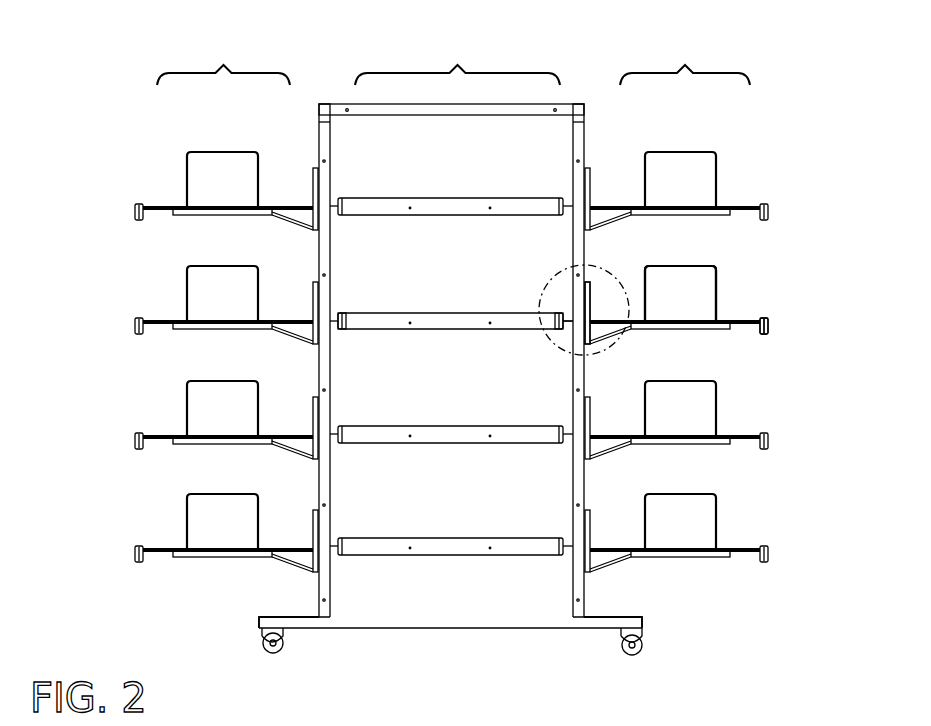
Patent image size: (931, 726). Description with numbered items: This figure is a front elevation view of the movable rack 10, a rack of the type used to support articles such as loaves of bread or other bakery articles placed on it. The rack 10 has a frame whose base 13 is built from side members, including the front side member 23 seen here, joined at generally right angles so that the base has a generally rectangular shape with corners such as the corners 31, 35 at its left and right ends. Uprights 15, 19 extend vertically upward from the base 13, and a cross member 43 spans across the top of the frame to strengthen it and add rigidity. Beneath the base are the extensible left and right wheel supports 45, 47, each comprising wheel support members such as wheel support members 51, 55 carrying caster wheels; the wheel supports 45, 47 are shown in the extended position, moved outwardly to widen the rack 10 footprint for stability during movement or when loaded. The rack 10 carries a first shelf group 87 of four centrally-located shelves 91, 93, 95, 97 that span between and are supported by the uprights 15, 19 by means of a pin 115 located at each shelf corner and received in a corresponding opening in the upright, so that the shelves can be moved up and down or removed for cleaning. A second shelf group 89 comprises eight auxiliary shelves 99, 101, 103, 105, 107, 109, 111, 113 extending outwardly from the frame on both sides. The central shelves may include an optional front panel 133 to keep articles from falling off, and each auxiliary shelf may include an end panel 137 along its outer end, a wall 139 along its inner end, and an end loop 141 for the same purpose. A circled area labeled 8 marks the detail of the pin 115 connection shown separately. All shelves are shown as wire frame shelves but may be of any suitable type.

The movable rack 10 is at (149, 49).
The base 13 is at (503, 628).
The upright 15 is at (320, 488).
The upright 19 is at (586, 133).
The front side member 23 is at (443, 600).
The corner 31 is at (322, 590).
The corner 35 is at (585, 587).
The cross member 43 is at (513, 108).
The left wheel support 45 is at (219, 629).
The right wheel support 47 is at (676, 629).
The wheel support member 51 is at (306, 622).
The wheel support member 55 is at (600, 622).
The first shelf group 87 is at (457, 60).
The second shelf group 89 is at (453, 60).
The shelf 91 is at (386, 538).
The shelf 93 is at (386, 426).
The shelf 95 is at (400, 313).
The shelf 97 is at (436, 198).
The auxiliary shelf 99 is at (156, 553).
The auxiliary shelf 101 is at (163, 437).
The auxiliary shelf 103 is at (162, 322).
The auxiliary shelf 105 is at (160, 207).
The auxiliary shelf 107 is at (742, 548).
The auxiliary shelf 109 is at (740, 437).
The auxiliary shelf 111 is at (740, 322).
The auxiliary shelf 113 is at (742, 207).
The pin 115 is at (562, 334).
The front panel 133 is at (352, 320).
The end panel 137 is at (770, 327).
The wall 139 is at (592, 292).
The end loop 141 is at (720, 275).
The detail view indicator 8 is at (568, 265).